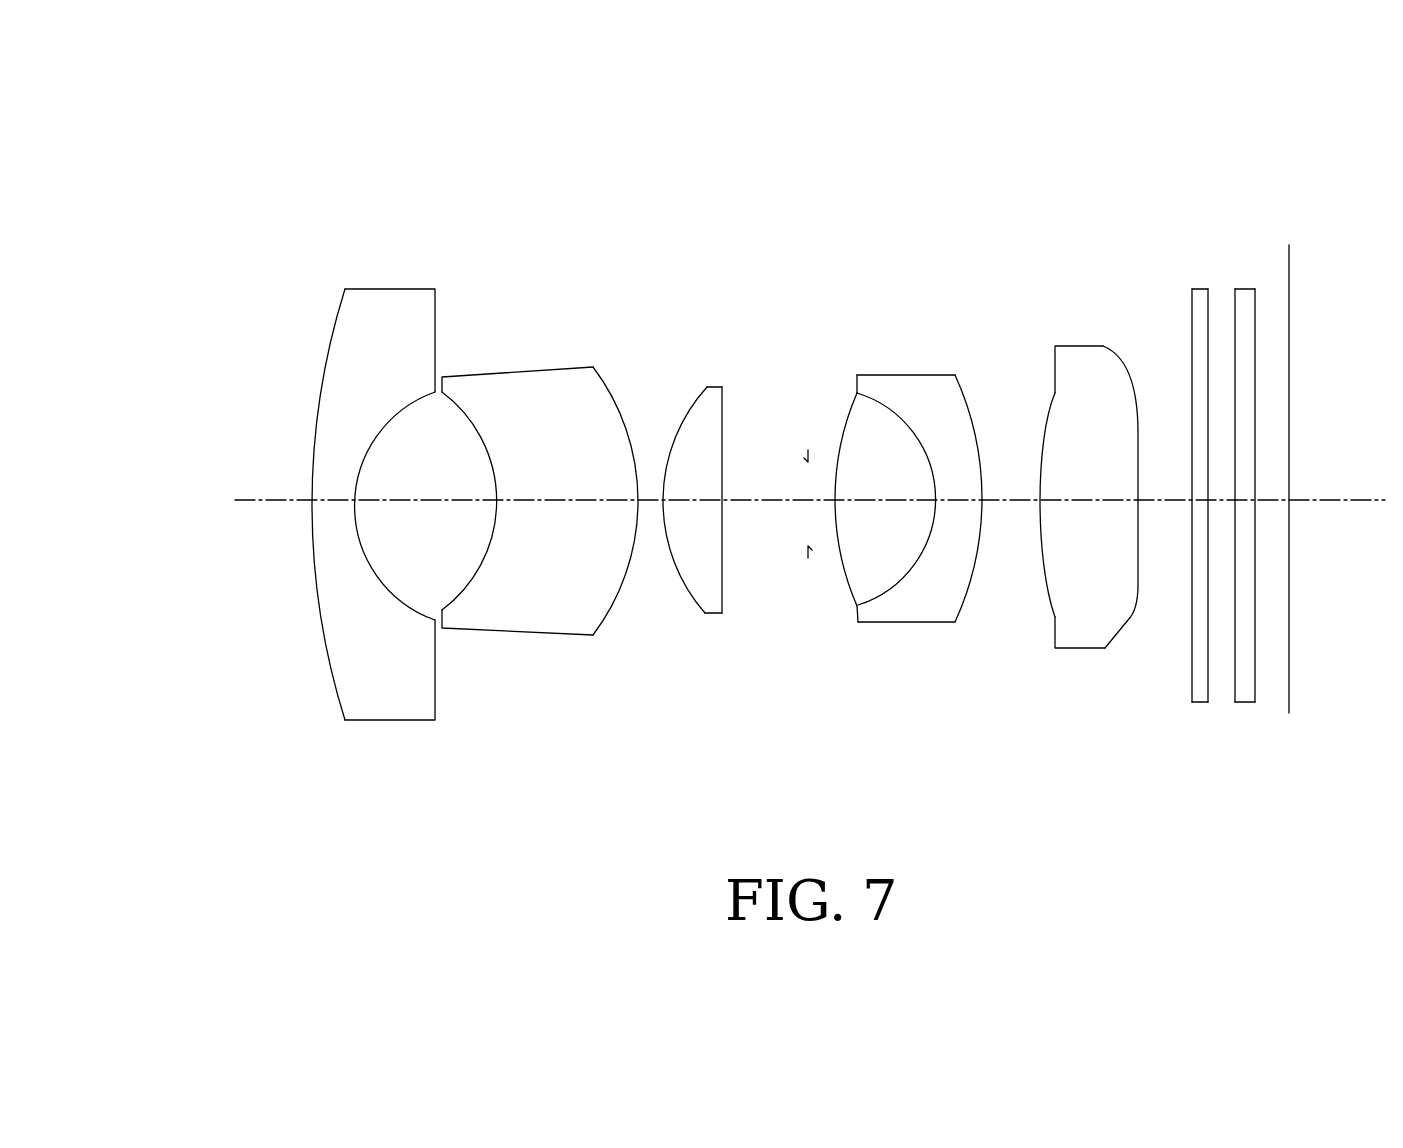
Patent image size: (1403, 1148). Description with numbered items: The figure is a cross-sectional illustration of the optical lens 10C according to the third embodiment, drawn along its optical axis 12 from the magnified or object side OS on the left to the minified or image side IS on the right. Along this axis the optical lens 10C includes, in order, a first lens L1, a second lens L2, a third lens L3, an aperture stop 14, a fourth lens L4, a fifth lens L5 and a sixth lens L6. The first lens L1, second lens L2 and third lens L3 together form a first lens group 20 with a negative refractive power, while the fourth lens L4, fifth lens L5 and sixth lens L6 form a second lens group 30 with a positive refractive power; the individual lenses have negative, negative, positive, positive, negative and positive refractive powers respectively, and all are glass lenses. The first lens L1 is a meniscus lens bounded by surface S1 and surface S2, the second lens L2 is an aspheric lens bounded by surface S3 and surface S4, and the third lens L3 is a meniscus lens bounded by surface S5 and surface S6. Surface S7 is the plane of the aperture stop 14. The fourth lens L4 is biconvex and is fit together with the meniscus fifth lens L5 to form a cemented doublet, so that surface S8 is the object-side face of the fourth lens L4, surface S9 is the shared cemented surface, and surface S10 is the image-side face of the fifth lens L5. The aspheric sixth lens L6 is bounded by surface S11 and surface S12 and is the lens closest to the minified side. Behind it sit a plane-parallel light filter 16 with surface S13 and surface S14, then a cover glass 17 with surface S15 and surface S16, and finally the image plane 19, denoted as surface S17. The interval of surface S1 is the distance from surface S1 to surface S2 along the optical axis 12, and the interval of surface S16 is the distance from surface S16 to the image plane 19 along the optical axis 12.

The optical lens 10C is at (237, 110).
The object side OS is at (217, 220).
The image side IS is at (1371, 214).
The optical axis 12 is at (275, 500).
The aperture stop 14 is at (808, 452).
The light filter 16 is at (1200, 288).
The cover glass 17 is at (1245, 288).
The image plane 19 is at (1289, 318).
The first lens group 20 is at (767, 198).
The second lens group 30 is at (1157, 198).
The first lens L1 is at (392, 289).
The second lens L2 is at (500, 382).
The third lens L3 is at (717, 387).
The fourth lens L4 is at (853, 403).
The fifth lens L5 is at (910, 375).
The sixth lens L6 is at (1070, 346).
The surface S1 is at (330, 665).
The surface S2 is at (437, 685).
The surface S3 is at (440, 600).
The surface S4 is at (617, 595).
The surface S5 is at (690, 592).
The surface S6 is at (722, 595).
The surface S7 is at (808, 558).
The surface S8 is at (845, 575).
The surface S9 is at (915, 565).
The surface S10 is at (968, 595).
The surface S11 is at (1055, 617).
The surface S12 is at (1128, 620).
The surface S13 is at (1192, 645).
The surface S14 is at (1208, 665).
The surface S15 is at (1235, 665).
The surface S16 is at (1255, 655).
The surface S17 is at (1289, 650).